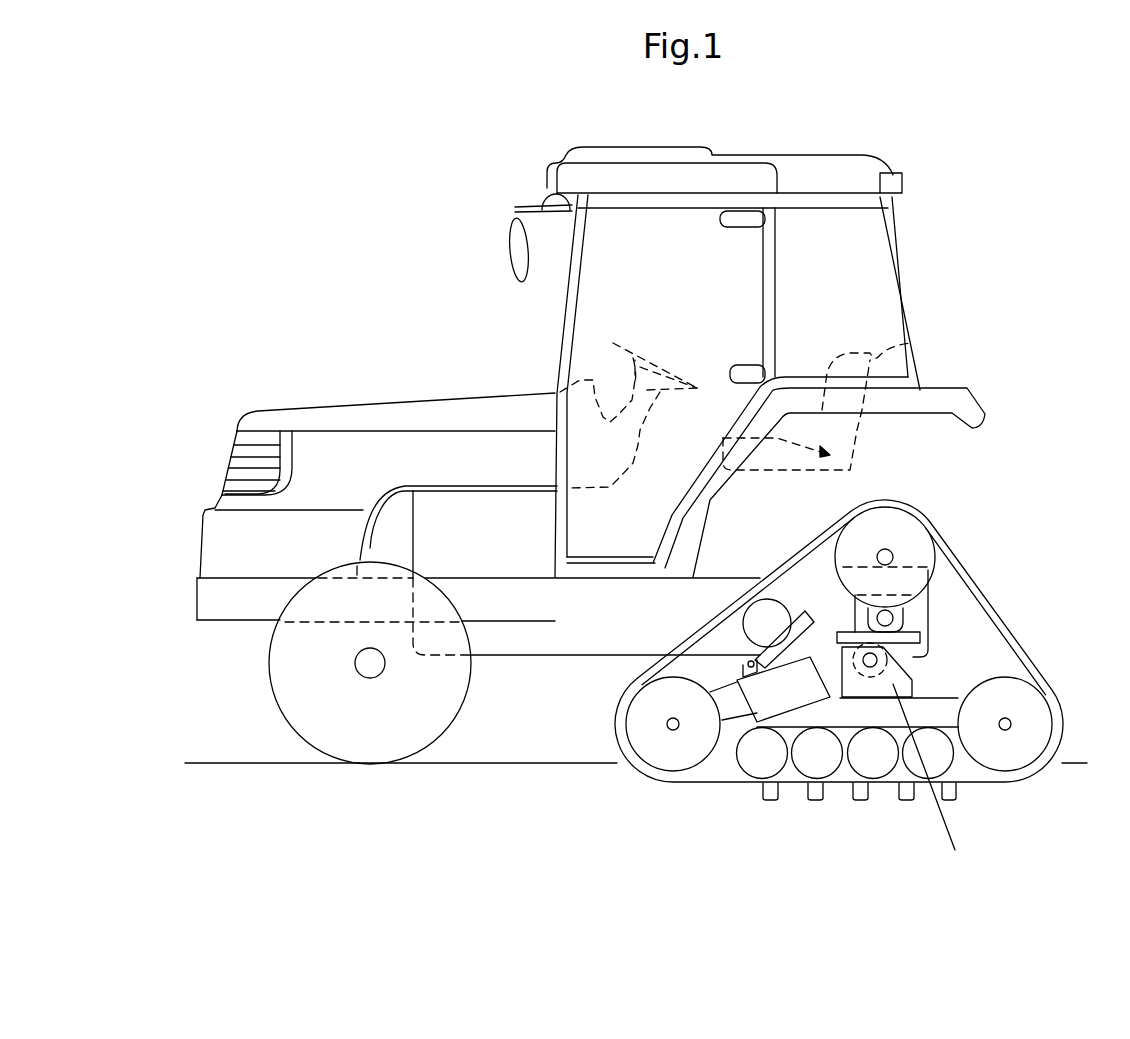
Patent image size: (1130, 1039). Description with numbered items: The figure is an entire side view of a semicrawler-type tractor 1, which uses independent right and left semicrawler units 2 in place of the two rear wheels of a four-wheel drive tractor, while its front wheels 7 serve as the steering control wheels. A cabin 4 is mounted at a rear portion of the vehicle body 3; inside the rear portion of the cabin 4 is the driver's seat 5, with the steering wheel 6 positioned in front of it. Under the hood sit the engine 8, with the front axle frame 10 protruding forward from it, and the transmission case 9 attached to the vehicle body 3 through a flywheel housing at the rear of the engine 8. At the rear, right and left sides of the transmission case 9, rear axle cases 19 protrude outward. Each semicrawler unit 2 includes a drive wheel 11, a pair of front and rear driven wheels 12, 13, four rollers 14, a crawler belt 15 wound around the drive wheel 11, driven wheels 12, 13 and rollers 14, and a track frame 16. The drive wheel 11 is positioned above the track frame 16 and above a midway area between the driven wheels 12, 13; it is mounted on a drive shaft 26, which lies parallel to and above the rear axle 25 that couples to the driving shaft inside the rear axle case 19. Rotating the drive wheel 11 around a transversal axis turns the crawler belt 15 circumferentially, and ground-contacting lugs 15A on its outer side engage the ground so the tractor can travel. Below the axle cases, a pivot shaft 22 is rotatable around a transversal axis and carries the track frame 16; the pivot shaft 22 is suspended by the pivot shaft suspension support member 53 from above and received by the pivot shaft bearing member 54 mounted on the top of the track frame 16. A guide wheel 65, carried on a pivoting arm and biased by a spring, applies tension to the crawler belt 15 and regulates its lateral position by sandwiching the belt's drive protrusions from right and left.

The semicrawler-type tractor 1 is at (937, 282).
The semicrawler unit 2 is at (872, 651).
The vehicle body 3 is at (478, 828).
The cabin 4 is at (920, 189).
The driver's seat 5 is at (887, 355).
The steering wheel 6 is at (608, 342).
The front wheel 7 is at (272, 665).
The engine 8 is at (497, 657).
The transmission case 9 is at (603, 657).
The front axle frame 10 is at (527, 607).
The drive wheel 11 is at (938, 568).
The front driven wheel 12 is at (673, 735).
The rear driven wheel 13 is at (1011, 725).
The roller 14 is at (817, 763).
The crawler belt 15 is at (1007, 617).
The ground-contacting lug 15A is at (948, 795).
The track frame 16 is at (922, 713).
The rear axle case 19 is at (910, 627).
The pivot shaft 22 is at (932, 663).
The rear axle 25 is at (907, 618).
The drive shaft 26 is at (887, 550).
The pivot shaft suspension support member 53 is at (840, 665).
The pivot shaft bearing member 54 is at (937, 784).
The guide wheel 65 is at (755, 616).